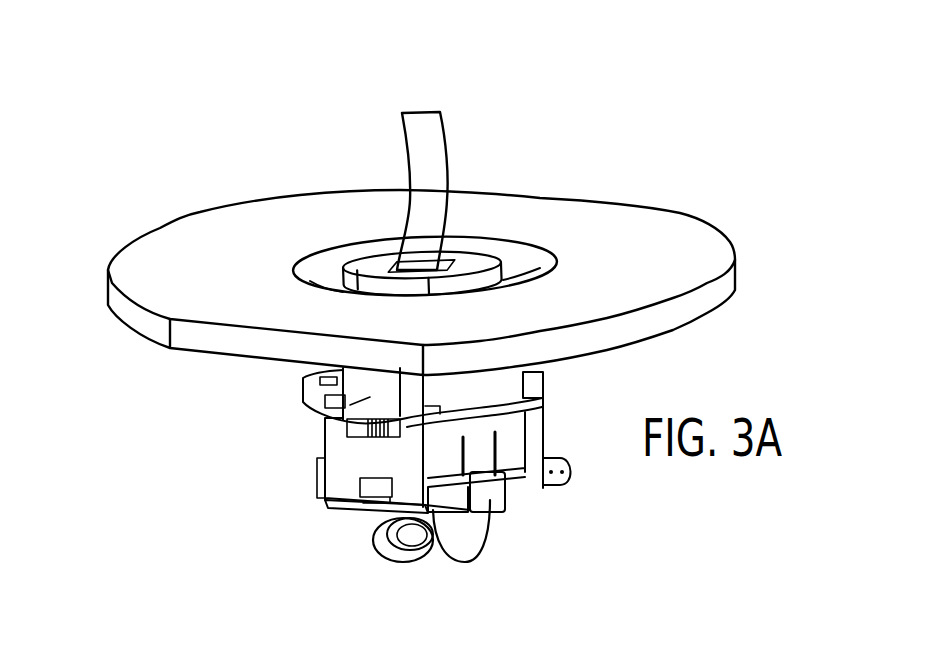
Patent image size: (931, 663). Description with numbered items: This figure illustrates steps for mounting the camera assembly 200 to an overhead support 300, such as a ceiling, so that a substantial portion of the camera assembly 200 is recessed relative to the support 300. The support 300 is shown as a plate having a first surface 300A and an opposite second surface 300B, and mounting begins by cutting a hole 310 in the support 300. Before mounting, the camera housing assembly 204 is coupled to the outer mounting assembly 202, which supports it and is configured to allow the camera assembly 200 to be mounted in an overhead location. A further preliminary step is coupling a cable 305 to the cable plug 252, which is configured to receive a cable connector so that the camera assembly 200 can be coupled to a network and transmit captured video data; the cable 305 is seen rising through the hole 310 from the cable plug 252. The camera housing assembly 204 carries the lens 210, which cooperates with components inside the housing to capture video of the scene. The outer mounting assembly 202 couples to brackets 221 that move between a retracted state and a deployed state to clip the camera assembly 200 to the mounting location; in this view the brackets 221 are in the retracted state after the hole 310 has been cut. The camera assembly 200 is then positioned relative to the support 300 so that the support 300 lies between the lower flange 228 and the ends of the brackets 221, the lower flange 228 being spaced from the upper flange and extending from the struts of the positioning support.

The camera assembly 200 is at (718, 97).
The support 300 is at (108, 290).
The first surface 300A is at (247, 356).
The second surface 300B is at (235, 243).
The hole 310 is at (342, 228).
The cable 305 is at (432, 137).
The cable plug 252 is at (450, 257).
The outer mounting assembly 202 is at (297, 397).
The brackets 221 is at (327, 421).
The lower flanges 228 is at (335, 510).
The lens 210 is at (495, 565).
The camera housing assembly 204 is at (367, 550).